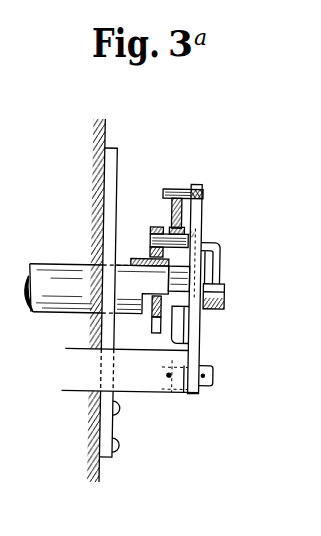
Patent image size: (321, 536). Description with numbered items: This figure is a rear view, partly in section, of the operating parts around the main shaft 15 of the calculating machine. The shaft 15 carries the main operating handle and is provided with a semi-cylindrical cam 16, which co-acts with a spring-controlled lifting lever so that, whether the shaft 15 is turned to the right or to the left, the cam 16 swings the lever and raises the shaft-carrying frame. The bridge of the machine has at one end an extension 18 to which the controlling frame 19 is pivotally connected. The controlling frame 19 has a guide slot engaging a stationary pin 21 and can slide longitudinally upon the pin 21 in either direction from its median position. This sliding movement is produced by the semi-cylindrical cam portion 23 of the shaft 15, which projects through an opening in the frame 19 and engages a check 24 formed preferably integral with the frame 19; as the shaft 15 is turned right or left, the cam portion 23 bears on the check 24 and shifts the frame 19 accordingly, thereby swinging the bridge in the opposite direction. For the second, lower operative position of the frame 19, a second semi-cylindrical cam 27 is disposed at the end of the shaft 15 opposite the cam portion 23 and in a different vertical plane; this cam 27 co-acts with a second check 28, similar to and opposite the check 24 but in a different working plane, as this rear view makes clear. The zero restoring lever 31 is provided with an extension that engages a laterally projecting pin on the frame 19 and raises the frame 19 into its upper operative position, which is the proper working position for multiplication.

The shaft 15 is at (73, 284).
The cam 16 is at (149, 262).
The extension 18 is at (83, 379).
The controlling frame 19 is at (191, 390).
The stationary pin 21 is at (202, 230).
The semi-cylindrical cam portion 23 is at (178, 281).
The check 24 is at (178, 322).
The second semi-cylindrical cam 27 is at (215, 298).
The second check 28 is at (217, 251).
The zero restoring lever 31 is at (178, 220).